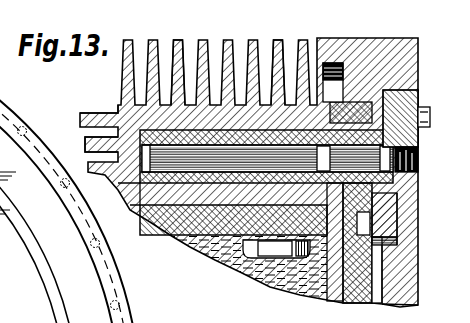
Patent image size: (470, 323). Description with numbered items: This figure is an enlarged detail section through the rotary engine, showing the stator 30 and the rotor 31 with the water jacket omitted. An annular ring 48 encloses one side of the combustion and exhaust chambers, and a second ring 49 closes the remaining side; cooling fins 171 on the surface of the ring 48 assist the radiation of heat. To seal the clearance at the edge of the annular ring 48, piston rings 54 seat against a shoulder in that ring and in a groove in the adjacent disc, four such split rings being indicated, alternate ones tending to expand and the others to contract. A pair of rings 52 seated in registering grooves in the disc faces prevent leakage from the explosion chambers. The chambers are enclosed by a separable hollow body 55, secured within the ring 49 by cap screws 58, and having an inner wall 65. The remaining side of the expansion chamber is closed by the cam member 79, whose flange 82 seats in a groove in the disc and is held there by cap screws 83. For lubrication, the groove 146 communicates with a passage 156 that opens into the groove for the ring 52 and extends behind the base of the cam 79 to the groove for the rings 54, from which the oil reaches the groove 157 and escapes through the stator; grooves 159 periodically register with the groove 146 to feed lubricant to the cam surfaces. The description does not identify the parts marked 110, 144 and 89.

The stator 30 is at (423, 76).
The rotor 31 is at (187, 40).
The cooling fins 171 is at (276, 40).
The groove 157 is at (332, 62).
The annular ring 48 is at (116, 113).
The fin 110 is at (90, 140).
The piston rings 54 is at (408, 104).
The cap screws 83 is at (430, 121).
The flange 82 is at (421, 144).
The second ring 49 is at (178, 205).
The hollow body 55 is at (243, 180).
The cam member 79 is at (238, 207).
The inner wall 65 is at (321, 283).
The rings 52 is at (396, 211).
The passage 156 is at (400, 234).
The grooves 159 is at (400, 246).
The groove 146 is at (395, 250).
The cap screws 58 is at (352, 298).
The guide column 144 is at (375, 299).
The base 89 is at (406, 301).